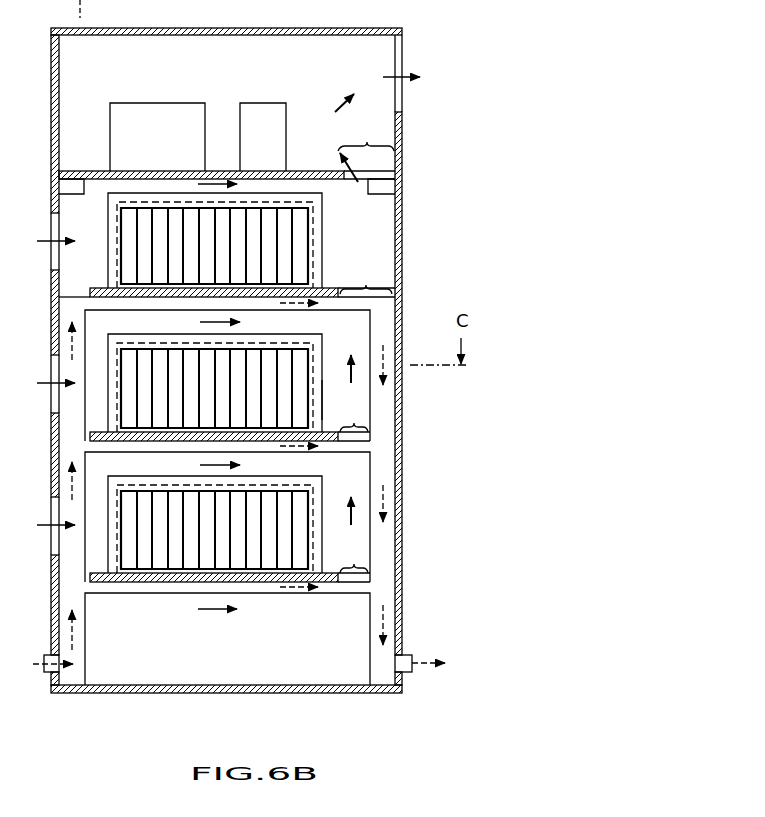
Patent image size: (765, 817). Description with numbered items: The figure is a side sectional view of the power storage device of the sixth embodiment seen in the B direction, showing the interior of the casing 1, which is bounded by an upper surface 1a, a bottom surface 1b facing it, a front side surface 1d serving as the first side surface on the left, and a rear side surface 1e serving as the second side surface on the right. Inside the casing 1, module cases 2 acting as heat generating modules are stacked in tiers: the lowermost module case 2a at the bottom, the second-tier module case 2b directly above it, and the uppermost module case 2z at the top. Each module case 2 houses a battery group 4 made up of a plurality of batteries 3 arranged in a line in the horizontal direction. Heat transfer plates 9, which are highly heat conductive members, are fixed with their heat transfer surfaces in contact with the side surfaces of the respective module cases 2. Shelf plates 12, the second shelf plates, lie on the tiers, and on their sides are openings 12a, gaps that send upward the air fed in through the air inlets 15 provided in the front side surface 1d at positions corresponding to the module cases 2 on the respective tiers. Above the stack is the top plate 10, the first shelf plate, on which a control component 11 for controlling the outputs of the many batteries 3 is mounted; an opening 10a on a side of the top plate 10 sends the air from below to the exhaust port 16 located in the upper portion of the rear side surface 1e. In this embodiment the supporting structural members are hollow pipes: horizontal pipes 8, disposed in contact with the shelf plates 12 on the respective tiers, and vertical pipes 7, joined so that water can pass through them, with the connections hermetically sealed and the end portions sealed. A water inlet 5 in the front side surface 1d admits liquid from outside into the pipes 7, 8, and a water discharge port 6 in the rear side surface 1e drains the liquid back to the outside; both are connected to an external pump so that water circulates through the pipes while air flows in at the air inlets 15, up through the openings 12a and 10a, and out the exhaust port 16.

The casing 1 is at (128, 28).
The upper surface 1a is at (216, 28).
The bottom surface 1b is at (226, 690).
The front side surface 1d is at (51, 327).
The rear side surface 1e is at (402, 131).
The module case 2 is at (323, 255).
The lowermost module case 2a is at (317, 592).
The second-tier module case 2b is at (323, 392).
The uppermost module case 2z is at (323, 223).
The battery 3 is at (272, 507).
The battery group 4 is at (118, 218).
The water inlet 5 is at (48, 672).
The water discharge port 6 is at (410, 672).
The vertical pipe 7 is at (395, 641).
The horizontal pipe 8 is at (345, 447).
The heat transfer plate 9 is at (315, 353).
The top plate 10 is at (312, 170).
The opening 10a is at (366, 151).
The control component 11 is at (128, 103).
The shelf plate 12 is at (138, 297).
The opening 12a is at (337, 426).
The air inlet 15 is at (51, 226).
The exhaust port 16 is at (402, 103).